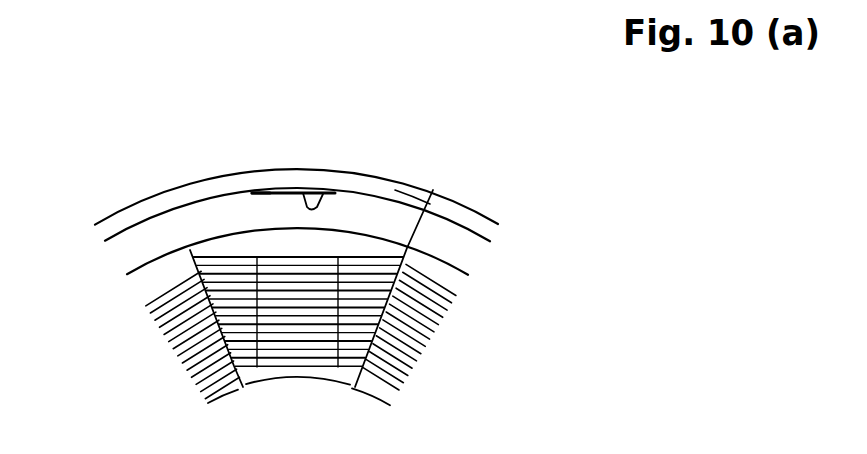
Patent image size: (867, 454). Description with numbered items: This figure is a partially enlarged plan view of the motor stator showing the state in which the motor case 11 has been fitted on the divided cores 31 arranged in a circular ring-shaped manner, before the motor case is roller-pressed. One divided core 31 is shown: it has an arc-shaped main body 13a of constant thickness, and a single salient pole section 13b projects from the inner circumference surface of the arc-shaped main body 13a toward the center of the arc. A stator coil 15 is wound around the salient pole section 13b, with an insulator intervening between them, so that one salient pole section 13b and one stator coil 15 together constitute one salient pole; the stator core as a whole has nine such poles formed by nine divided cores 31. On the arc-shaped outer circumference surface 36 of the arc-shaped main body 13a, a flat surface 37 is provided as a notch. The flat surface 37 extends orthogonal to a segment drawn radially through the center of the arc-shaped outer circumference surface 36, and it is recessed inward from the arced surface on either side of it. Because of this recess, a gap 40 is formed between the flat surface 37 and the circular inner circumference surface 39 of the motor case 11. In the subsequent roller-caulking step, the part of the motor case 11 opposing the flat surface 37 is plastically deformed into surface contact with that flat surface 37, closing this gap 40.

The motor case 11 is at (487, 213).
The divided core 31 is at (388, 212).
The arc-shaped outer circumference surface 36 is at (384, 205).
The flat surface 37 is at (331, 193).
The circular inner circumference surface 39 is at (263, 190).
The gap 40 is at (288, 195).
The arc-shaped main body 13a is at (190, 250).
The salient pole section 13b is at (203, 301).
The stator coil 15 is at (317, 357).